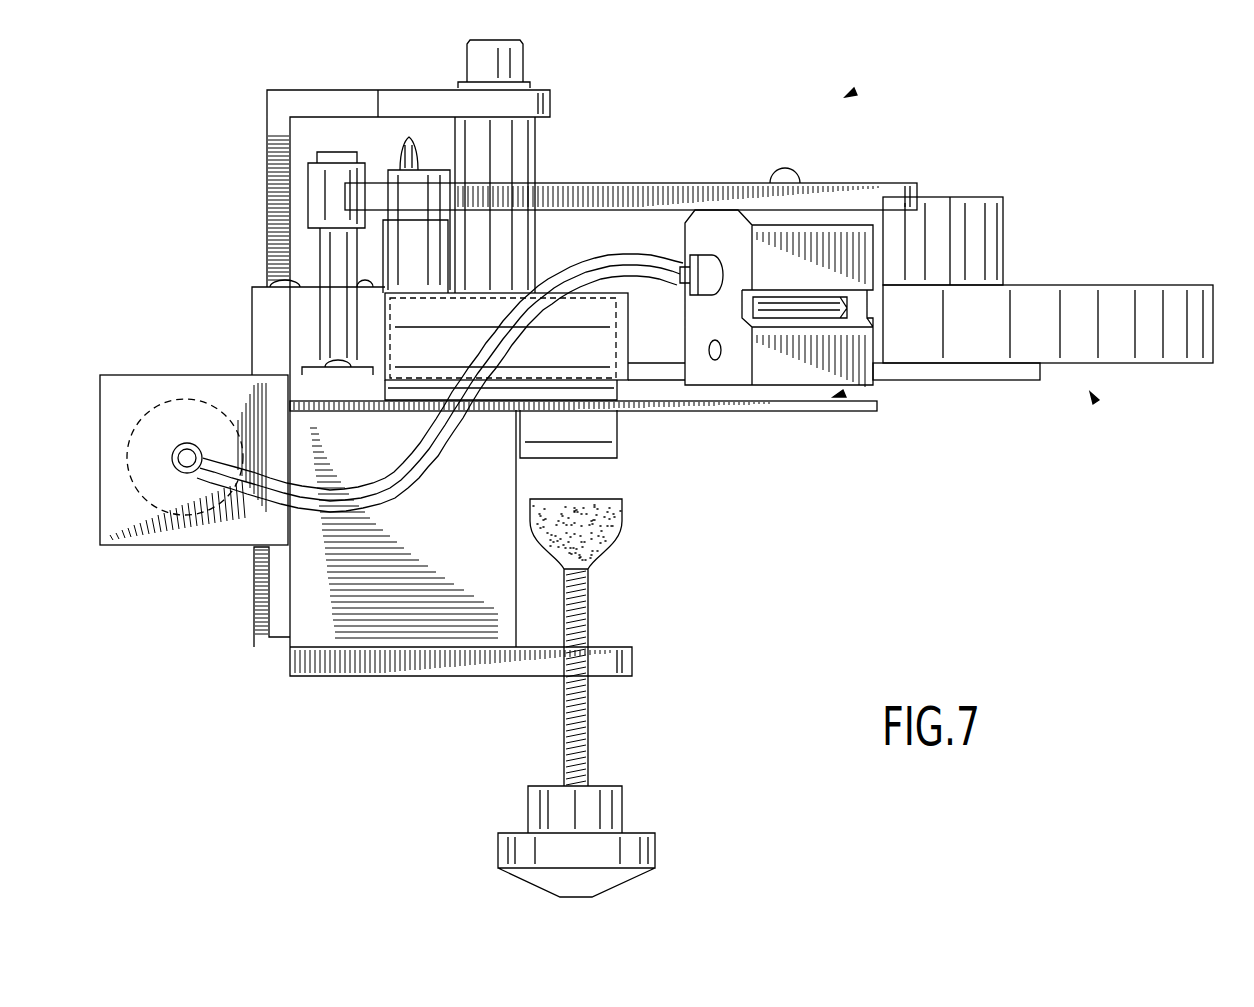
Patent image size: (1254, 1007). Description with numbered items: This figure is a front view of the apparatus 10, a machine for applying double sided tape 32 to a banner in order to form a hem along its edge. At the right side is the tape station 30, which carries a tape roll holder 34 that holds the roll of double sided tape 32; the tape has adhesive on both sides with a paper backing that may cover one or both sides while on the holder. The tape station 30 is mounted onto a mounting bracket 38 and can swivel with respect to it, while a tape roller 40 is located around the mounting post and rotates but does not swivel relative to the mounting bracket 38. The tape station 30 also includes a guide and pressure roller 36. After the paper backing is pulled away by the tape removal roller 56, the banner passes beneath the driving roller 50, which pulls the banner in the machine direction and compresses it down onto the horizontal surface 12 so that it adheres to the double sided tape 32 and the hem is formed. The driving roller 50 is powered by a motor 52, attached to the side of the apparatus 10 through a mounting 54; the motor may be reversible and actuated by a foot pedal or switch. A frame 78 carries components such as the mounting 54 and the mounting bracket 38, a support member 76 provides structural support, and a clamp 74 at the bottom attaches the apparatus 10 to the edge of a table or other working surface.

The apparatus 10 is at (847, 96).
The horizontal surface 12 is at (845, 396).
The tape station 30 is at (1095, 398).
The double sided tape 32 is at (1118, 300).
The tape roll holder 34 is at (987, 220).
The guide and pressure roller 36 is at (413, 258).
The mounting bracket 38 is at (275, 130).
The tape roller 40 is at (517, 152).
The driving roller 50 is at (587, 393).
The motor 52 is at (176, 405).
The mounting 54 is at (290, 308).
The tape removal roller 56 is at (790, 312).
The clamp 74 is at (583, 722).
The support member 76 is at (356, 606).
The frame 78 is at (257, 617).